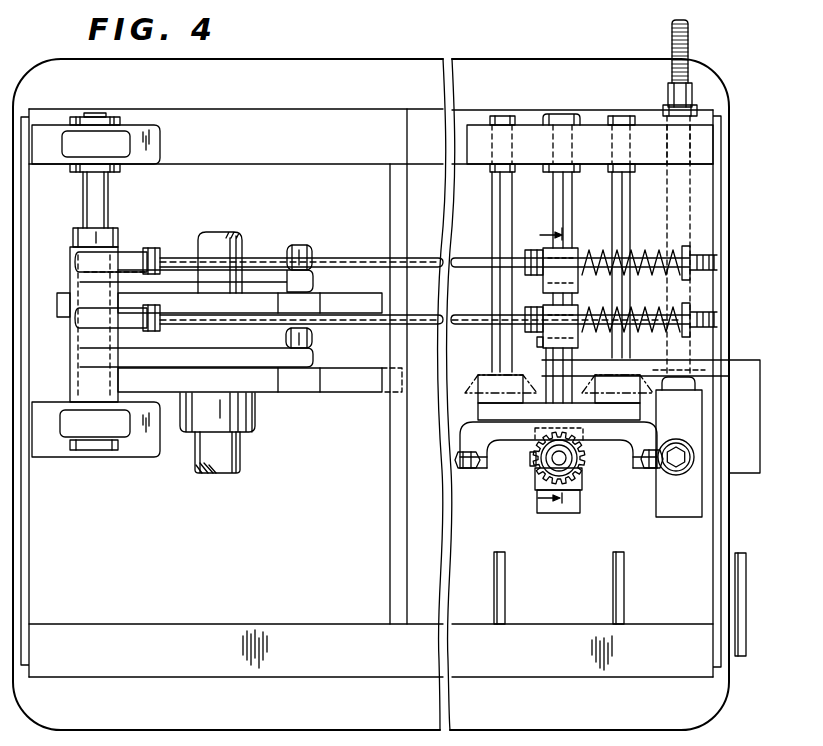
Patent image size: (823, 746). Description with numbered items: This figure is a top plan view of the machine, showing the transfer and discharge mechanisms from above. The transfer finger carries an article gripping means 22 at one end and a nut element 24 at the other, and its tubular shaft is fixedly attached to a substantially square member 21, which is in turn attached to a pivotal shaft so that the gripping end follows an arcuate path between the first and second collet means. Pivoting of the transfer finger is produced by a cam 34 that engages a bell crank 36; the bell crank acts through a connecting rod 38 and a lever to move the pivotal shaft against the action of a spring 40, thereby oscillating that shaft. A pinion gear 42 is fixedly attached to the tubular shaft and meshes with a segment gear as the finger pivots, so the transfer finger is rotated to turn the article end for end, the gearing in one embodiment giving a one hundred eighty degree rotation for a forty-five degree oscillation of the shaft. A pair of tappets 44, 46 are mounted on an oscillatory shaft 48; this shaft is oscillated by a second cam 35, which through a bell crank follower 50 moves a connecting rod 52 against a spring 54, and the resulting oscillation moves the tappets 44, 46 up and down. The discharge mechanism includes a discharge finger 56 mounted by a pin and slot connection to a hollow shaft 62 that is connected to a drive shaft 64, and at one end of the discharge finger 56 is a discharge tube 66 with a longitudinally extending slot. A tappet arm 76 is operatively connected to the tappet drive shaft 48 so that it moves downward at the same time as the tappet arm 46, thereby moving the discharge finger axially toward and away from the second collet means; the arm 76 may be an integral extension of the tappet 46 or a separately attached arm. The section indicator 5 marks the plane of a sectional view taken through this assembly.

The section line 5- 5 is at (536, 368).
The square member 21 is at (582, 488).
The article gripping means 22 is at (547, 511).
The nut element 24 is at (569, 456).
The cam 34 is at (346, 385).
The cam 35 is at (369, 289).
The bell crank 36 is at (312, 362).
The connecting rod 38 is at (219, 323).
The spring 40 is at (666, 311).
The pinion gear 42 is at (534, 459).
The tappet 44 is at (462, 462).
The tappet 46 is at (650, 470).
The oscillatory shaft 48 is at (551, 116).
The bell crank follower 50 is at (315, 282).
The connecting rod 52 is at (366, 262).
The spring 54 is at (666, 256).
The discharge finger 56 is at (708, 489).
The hollow shaft 62 is at (661, 482).
The drive shaft 64 is at (690, 388).
The discharge tube 66 is at (672, 508).
The tappet arm 76 is at (753, 410).